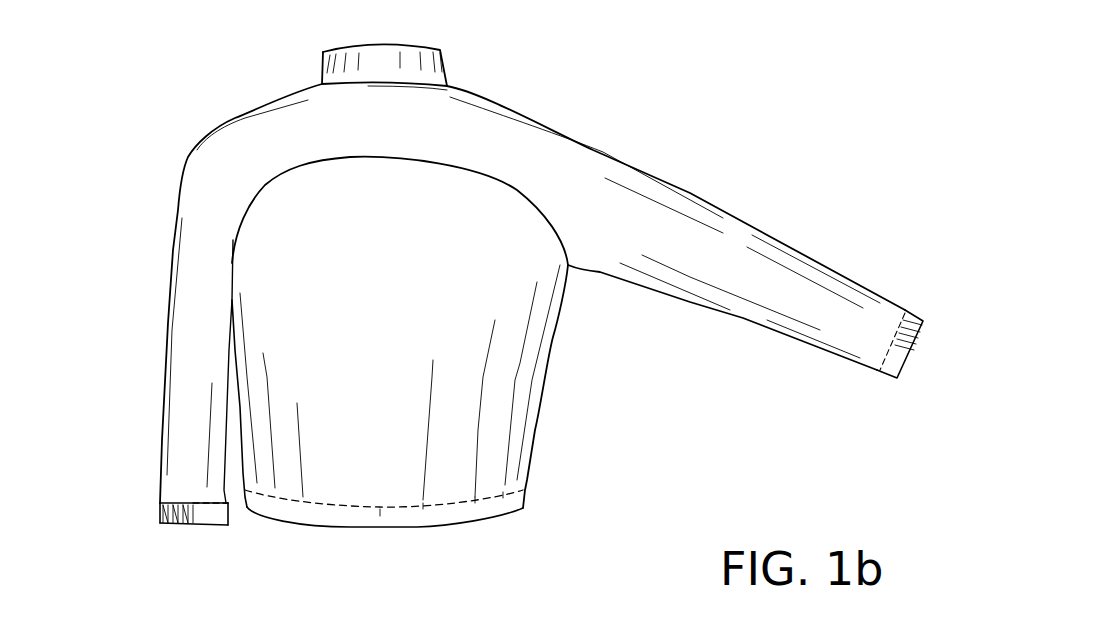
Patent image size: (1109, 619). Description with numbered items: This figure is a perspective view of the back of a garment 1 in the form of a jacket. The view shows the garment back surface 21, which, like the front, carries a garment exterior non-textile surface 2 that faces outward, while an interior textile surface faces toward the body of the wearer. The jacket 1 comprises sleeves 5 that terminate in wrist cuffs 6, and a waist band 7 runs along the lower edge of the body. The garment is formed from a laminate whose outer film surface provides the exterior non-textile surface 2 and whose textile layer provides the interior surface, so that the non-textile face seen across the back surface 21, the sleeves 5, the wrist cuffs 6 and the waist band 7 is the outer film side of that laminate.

The garment 1 is at (364, 285).
The exterior non-textile surface 2 is at (280, 277).
The garment back surface 21 is at (557, 160).
The sleeves 5 is at (733, 257).
The wrist cuffs 6 is at (907, 318).
The waist band 7 is at (450, 517).